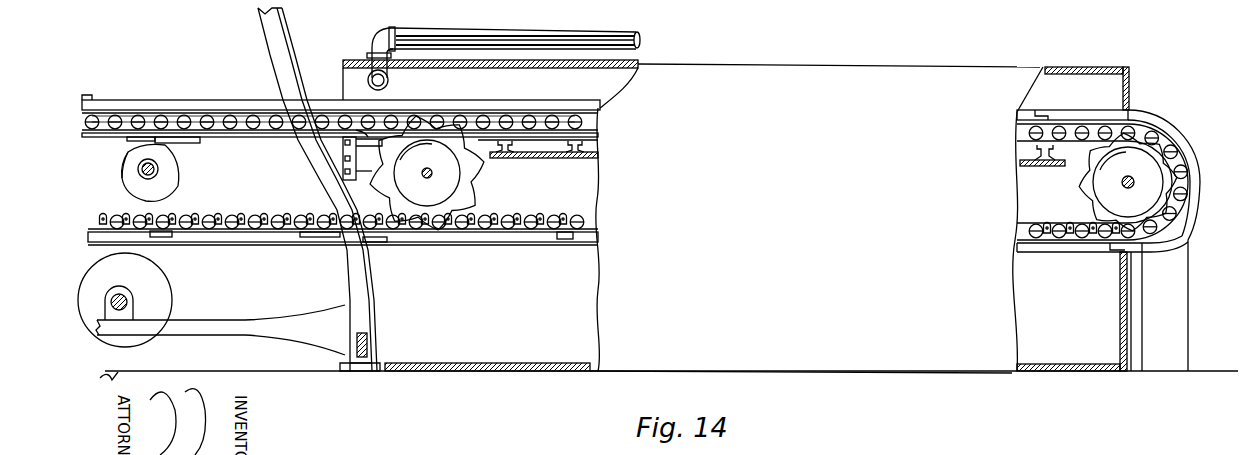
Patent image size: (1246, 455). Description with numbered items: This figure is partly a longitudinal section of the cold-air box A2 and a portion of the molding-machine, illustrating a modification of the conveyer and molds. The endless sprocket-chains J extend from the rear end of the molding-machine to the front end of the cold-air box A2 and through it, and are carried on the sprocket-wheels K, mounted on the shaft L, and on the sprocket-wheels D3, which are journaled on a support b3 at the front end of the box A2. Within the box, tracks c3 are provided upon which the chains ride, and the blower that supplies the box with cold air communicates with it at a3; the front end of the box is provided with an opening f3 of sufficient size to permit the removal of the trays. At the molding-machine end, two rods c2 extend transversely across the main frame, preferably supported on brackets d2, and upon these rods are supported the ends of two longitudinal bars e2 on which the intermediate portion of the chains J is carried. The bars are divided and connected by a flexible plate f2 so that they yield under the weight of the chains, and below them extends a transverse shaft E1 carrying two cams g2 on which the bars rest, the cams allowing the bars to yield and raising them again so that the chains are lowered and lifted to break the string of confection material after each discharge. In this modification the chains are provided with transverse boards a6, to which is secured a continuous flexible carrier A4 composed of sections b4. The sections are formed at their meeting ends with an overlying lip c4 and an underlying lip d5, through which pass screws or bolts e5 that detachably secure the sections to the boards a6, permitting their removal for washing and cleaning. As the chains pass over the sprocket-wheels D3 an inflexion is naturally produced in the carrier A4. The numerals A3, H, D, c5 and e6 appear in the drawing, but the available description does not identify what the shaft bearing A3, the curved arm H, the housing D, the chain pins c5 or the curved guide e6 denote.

The box A2 is at (671, 218).
The shaft bearing A3 is at (170, 304).
The continuous flexible carrier A4 is at (168, 104).
The curved arm H is at (373, 306).
The conveyor housing D is at (90, 246).
The sprocket-wheels D3 is at (1082, 190).
The shaft L is at (427, 180).
The sprocket-wheels K is at (478, 180).
The endless sprocket-chains J is at (289, 140).
The transverse shaft E1 is at (160, 166).
The flexible plate f2 is at (125, 150).
The cams g2 is at (180, 184).
The longitudinal bars e2 is at (262, 140).
The blower communication a3 is at (368, 82).
The transverse boards a6 is at (195, 112).
The support b3 is at (1146, 307).
The sections b4 is at (99, 104).
The rods c2 is at (362, 155).
The brackets d2 is at (364, 179).
The tracks c3 is at (552, 150).
The overlying lip c4 is at (500, 106).
The chain pins c5 is at (222, 104).
The underlying lip d5 is at (500, 108).
The screws or bolts e5 is at (489, 100).
The curved guide e6 is at (1182, 136).
The opening f3 is at (1136, 103).